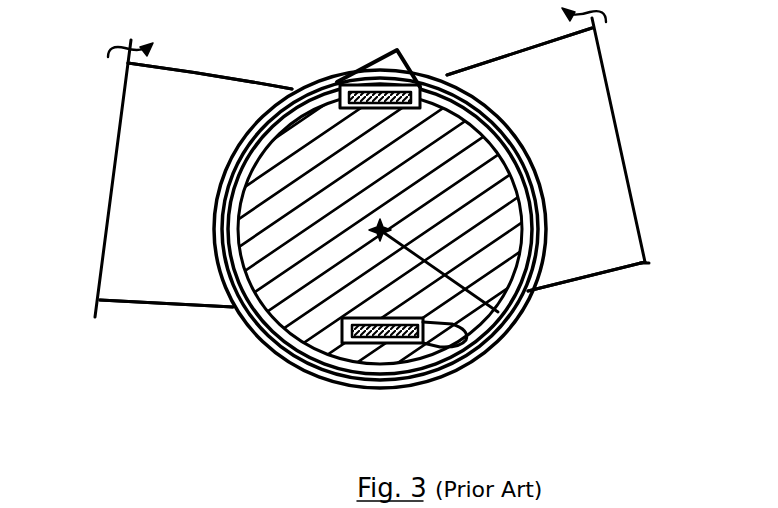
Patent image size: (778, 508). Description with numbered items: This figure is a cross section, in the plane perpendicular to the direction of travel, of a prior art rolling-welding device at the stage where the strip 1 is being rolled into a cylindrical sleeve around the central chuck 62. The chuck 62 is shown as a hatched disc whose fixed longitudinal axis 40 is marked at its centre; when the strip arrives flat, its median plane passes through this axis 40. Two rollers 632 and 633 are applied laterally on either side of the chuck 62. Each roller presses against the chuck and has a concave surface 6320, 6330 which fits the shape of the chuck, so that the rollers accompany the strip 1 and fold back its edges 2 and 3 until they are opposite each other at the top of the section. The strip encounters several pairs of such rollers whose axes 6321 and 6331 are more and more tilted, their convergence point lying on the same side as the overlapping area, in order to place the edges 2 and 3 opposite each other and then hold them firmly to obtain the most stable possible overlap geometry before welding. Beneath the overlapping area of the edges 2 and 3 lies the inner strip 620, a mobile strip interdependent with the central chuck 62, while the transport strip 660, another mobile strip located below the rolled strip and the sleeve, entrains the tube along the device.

The strip 1 is at (320, 373).
The edge of the strip 2 is at (396, 50).
The edge of the strip 3 is at (400, 66).
The fixed longitudinal axis 40 is at (498, 312).
The central chuck 62 is at (287, 298).
The inner strip 620 is at (417, 80).
The roller 632 is at (153, 164).
The concave surface 6320 is at (213, 220).
The axis of roller 6321 is at (120, 113).
The roller 633 is at (602, 178).
The concave surface 6330 is at (545, 236).
The axis of roller 6331 is at (607, 80).
The transport strip 660 is at (403, 385).